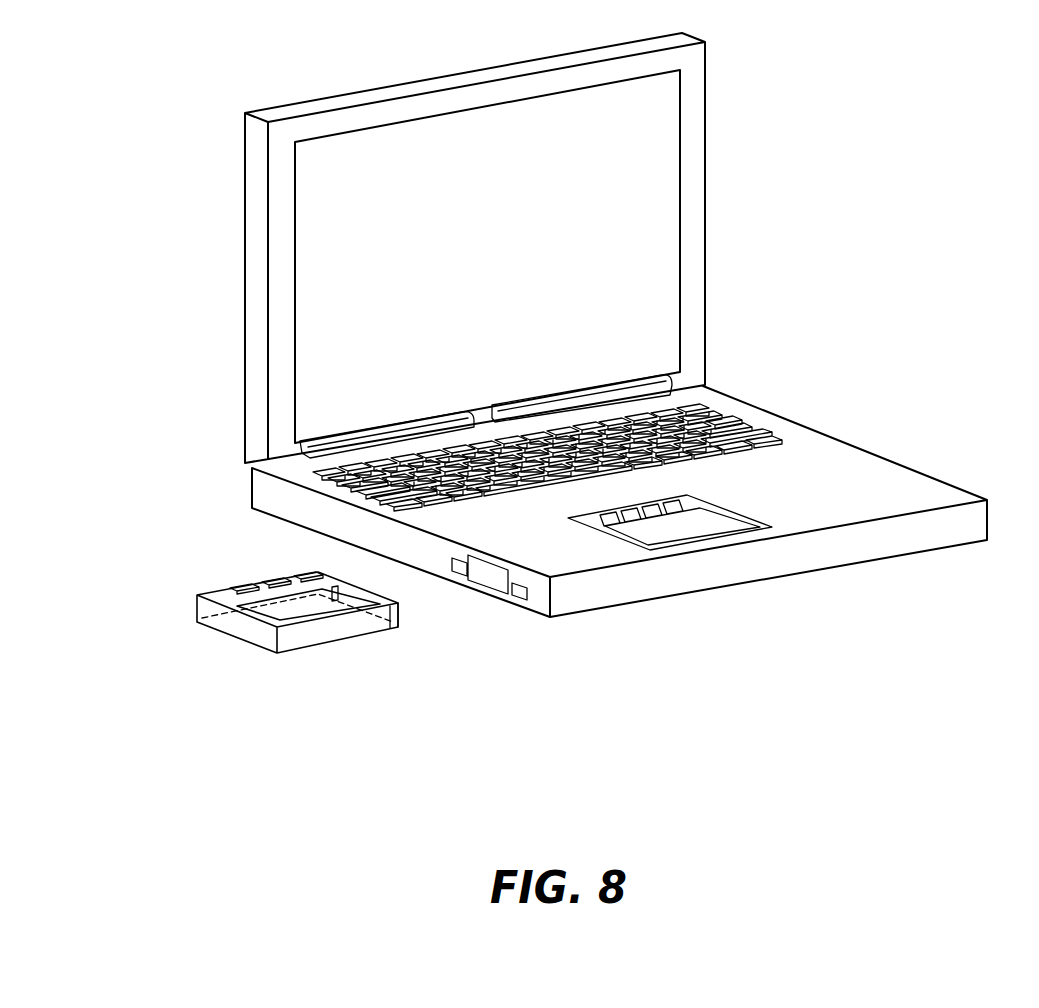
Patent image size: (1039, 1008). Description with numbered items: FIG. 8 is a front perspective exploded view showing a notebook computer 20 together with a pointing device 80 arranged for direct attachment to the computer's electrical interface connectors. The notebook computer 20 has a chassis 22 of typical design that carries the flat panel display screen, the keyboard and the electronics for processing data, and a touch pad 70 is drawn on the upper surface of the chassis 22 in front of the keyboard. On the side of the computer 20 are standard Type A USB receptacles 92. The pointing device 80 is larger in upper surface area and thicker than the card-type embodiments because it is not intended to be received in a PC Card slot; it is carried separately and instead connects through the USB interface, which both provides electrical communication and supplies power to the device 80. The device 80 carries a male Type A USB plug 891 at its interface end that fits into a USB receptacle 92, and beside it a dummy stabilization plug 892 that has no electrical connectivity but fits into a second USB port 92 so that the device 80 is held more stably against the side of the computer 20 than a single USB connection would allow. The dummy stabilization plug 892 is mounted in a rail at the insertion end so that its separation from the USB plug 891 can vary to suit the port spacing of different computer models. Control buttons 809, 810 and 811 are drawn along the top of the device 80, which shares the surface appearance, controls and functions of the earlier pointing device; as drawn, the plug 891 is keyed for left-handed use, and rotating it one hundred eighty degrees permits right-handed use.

The notebook computer 20 is at (758, 314).
The chassis 22 is at (853, 442).
The touch pad 70 is at (712, 523).
The USB receptacle 92 is at (434, 556).
The pointing device 80 is at (352, 644).
The button 809 is at (305, 574).
The button 810 is at (243, 587).
The button 811 is at (275, 580).
The male Type A USB plug 891 is at (400, 611).
The dummy stabilization plug 892 is at (360, 588).